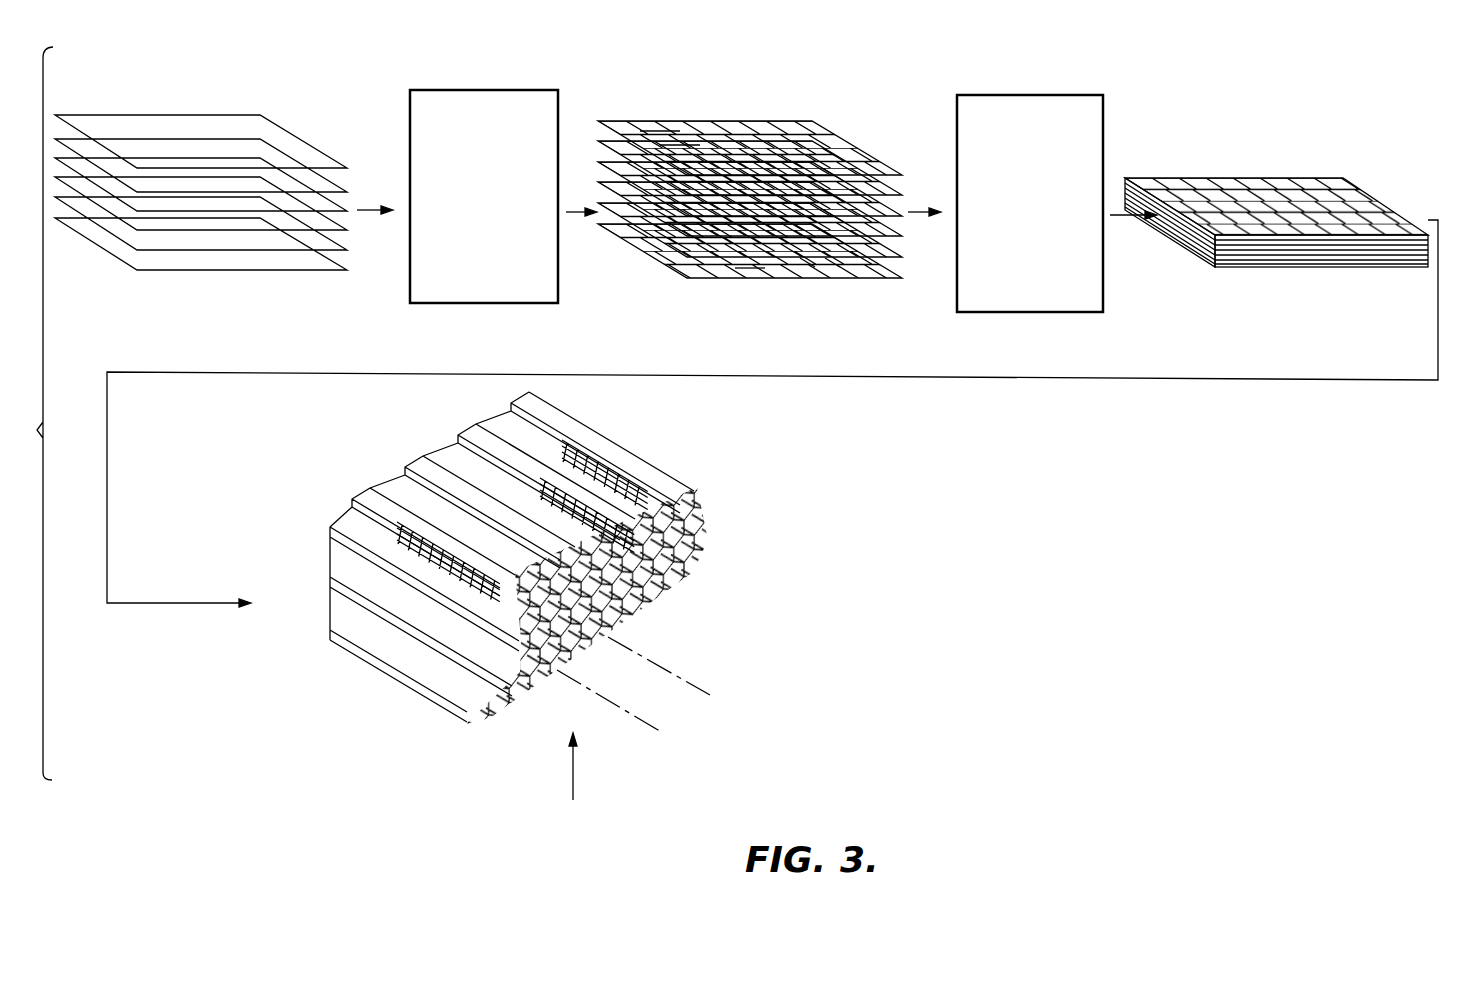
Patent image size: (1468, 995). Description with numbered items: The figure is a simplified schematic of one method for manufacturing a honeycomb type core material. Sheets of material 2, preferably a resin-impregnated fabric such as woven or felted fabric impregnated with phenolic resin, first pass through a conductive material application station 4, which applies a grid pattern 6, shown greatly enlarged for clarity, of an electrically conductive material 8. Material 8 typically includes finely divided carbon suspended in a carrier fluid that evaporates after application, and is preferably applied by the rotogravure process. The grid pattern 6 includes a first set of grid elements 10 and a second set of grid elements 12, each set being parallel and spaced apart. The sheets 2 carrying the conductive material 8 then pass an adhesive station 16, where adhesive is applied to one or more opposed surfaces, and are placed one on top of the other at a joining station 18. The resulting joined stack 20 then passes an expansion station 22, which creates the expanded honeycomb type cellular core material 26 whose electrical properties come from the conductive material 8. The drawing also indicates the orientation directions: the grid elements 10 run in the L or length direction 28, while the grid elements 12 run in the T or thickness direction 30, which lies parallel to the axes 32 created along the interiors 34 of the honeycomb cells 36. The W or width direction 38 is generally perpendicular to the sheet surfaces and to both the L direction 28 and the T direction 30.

The sheets of material 2 is at (127, 125).
The conductive material application station 4 is at (505, 85).
The grid pattern 6 is at (795, 125).
The electrically conductive material 8 is at (750, 268).
The first set of grid elements 10 is at (670, 146).
The second set of grid elements 12 is at (822, 270).
The adhesive station 16 is at (1055, 95).
The joining station 18 is at (1298, 94).
The joined stack 20 is at (1280, 258).
The expansion station 22 is at (324, 424).
The expanded honeycomb type cellular core material 26 is at (629, 436).
The L direction 28 is at (338, 707).
The T direction 30 is at (815, 694).
The axes 32 is at (647, 722).
The interiors 34 is at (660, 551).
The honeycomb cells 36 is at (470, 725).
The W direction 38 is at (576, 783).